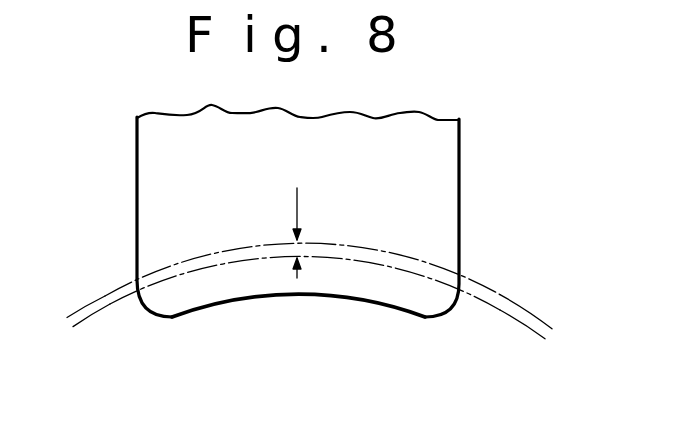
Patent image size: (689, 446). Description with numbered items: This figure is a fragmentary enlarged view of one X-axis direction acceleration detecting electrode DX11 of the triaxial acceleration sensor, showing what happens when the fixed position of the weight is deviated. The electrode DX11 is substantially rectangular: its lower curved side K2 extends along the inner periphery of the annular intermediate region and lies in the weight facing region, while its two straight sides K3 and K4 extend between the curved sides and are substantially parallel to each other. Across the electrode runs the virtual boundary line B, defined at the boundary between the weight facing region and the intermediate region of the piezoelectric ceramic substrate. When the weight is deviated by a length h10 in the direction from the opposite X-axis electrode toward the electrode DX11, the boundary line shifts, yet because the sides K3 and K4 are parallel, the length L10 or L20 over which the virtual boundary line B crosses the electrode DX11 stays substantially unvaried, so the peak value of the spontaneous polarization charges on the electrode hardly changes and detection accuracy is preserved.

The X-axis direction acceleration detecting electrode DX11 is at (410, 172).
The straight side K3 is at (137, 194).
The straight side K4 is at (461, 238).
The curved side K2 is at (283, 296).
The virtual boundary line B is at (514, 305).
The length of the virtual boundary line crossing the electrode L20 is at (359, 241).
The length of the virtual boundary line crossing the electrode L10 is at (343, 259).
The length of deviation of the fixed position of the weight h10 is at (323, 228).